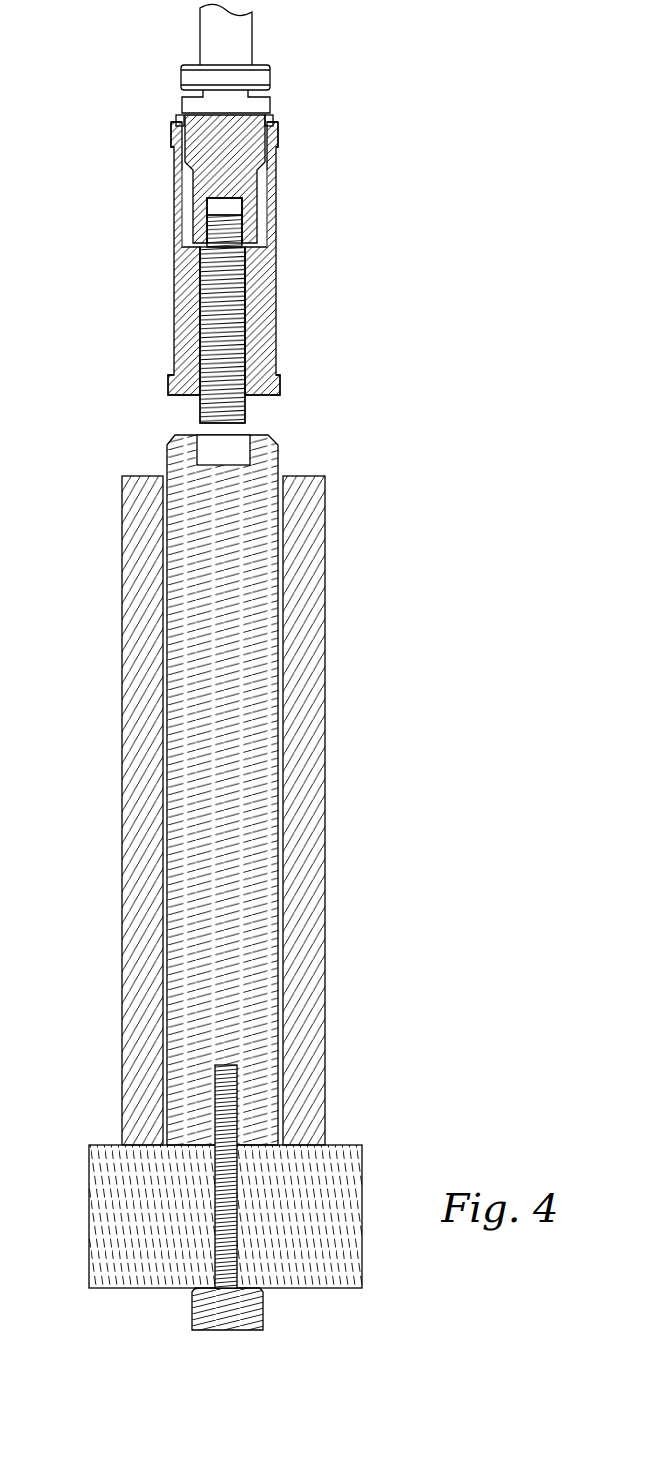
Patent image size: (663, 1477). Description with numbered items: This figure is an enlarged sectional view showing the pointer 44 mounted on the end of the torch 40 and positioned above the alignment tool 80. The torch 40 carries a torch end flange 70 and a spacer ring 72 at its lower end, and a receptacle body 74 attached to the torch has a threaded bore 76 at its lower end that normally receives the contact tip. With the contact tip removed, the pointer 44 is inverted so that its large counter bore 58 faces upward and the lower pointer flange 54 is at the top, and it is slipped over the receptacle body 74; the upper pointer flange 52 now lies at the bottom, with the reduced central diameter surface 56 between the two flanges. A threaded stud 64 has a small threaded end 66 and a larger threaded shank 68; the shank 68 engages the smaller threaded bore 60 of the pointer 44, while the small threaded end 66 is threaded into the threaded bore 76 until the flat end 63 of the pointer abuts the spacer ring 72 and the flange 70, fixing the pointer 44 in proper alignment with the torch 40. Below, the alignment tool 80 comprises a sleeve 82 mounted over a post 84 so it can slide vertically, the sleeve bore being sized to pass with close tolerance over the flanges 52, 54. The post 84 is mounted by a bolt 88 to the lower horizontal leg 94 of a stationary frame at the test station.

The torch 40 is at (256, 45).
The torch end flange 70 is at (180, 102).
The spacer ring 72 is at (177, 120).
The flat end 63 is at (278, 124).
The pointer 44 is at (215, 288).
The lower pointer flange 54 is at (172, 138).
The reduced central diameter surface 56 is at (172, 345).
The upper pointer flange 52 is at (168, 387).
The counter bore 58 is at (185, 200).
The receptacle body 74 is at (262, 160).
The threaded bore 76 is at (238, 212).
The small threaded end 66 is at (214, 214).
The threaded shank 68 is at (240, 283).
The threaded bore 60 is at (205, 310).
The threaded stud 64 is at (198, 430).
The alignment tool 80 is at (266, 790).
The sleeve 82 is at (321, 560).
The post 84 is at (272, 884).
The bolt 88 is at (222, 1093).
The lower horizontal leg 94 is at (320, 1153).